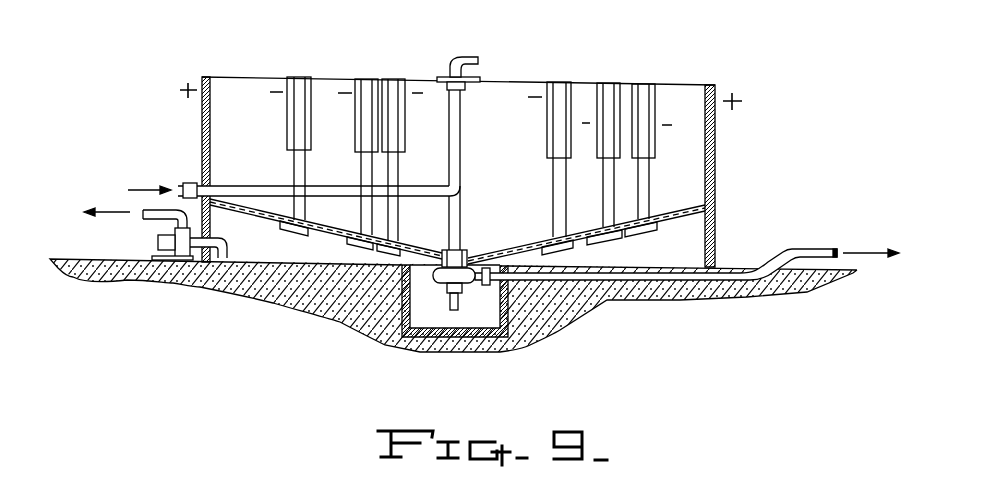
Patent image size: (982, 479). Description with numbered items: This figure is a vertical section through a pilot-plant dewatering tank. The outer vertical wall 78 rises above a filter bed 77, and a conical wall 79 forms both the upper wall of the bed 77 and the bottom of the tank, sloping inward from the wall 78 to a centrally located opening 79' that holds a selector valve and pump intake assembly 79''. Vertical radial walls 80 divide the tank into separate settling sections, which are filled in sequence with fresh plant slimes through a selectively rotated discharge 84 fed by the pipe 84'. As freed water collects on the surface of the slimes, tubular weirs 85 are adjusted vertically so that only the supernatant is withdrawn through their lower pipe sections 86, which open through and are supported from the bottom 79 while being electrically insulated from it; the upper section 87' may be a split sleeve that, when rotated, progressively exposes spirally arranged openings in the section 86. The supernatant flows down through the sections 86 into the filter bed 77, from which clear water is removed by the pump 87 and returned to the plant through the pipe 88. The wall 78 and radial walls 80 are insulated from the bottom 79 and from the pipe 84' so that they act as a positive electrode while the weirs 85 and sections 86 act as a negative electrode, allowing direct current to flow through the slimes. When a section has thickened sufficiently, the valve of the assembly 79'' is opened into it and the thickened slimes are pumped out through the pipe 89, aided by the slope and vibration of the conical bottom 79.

The filter bed 77 is at (292, 262).
The vertical wall 78 is at (715, 133).
The conical wall 79 is at (457, 232).
The centrally located opening 79' is at (478, 259).
The selector valve and pump intake assembly 79'' is at (436, 237).
The vertical radial walls 80 is at (460, 208).
The selectively rotated discharge 84 is at (466, 101).
The pipe 84' is at (380, 172).
The tubular weirs 85 is at (312, 128).
The lower pipe sections 86 is at (398, 170).
The pump 87 is at (366, 200).
The electrode sleeve 87' is at (348, 115).
The pipe 88 is at (232, 185).
The pipe 89 is at (607, 300).